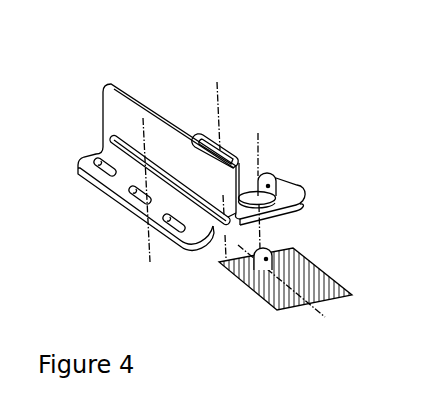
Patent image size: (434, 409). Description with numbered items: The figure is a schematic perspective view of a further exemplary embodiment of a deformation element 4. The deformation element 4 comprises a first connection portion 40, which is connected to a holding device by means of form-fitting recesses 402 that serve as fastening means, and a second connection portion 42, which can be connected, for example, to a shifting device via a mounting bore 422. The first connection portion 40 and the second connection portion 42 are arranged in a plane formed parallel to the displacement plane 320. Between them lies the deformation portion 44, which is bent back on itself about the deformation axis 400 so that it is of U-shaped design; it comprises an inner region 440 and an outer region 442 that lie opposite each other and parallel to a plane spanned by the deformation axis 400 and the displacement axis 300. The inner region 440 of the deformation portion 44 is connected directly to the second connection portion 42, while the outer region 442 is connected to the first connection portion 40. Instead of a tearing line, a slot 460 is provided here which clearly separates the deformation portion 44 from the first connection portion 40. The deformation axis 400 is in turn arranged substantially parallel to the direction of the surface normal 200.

The deformation element 4 is at (163, 67).
The first connection portion 40 is at (123, 183).
The deformation axis 400 is at (217, 82).
The form-fitting recesses 402 is at (97, 152).
The second connection portion 42 is at (301, 204).
The mounting bore 422 is at (293, 192).
The deformation portion 44 is at (135, 125).
The inner region 440 is at (227, 157).
The outer region 442 is at (222, 198).
The slot 460 is at (200, 215).
The surface normal 200 is at (258, 133).
The displacement axis 300 is at (290, 292).
The displacement plane 320 is at (297, 253).